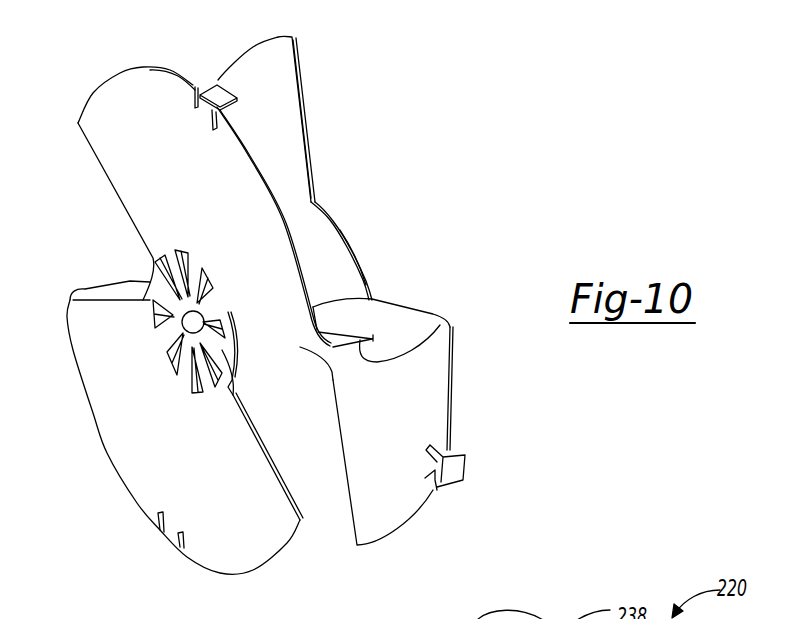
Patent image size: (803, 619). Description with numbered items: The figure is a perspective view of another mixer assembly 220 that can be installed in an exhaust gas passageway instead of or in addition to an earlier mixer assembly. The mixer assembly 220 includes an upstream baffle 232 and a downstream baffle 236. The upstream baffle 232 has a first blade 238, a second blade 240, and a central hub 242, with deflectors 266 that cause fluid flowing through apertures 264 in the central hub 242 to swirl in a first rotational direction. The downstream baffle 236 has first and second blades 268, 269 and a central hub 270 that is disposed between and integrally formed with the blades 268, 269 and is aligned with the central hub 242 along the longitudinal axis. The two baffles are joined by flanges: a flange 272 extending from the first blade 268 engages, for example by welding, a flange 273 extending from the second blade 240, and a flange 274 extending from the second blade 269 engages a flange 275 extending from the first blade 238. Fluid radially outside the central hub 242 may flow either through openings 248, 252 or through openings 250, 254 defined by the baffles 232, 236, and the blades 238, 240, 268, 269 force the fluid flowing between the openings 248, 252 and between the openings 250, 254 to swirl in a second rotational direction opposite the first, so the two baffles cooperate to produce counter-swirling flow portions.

The mixer assembly 220 is at (460, 132).
The upstream baffle 232 is at (166, 410).
The downstream baffle 236 is at (318, 119).
The first blade 238 is at (145, 73).
The second blade 240 is at (232, 568).
The central hub 242 is at (222, 350).
The opening 248 is at (100, 189).
The opening 250 is at (280, 436).
The opening 252 is at (343, 202).
The opening 254 is at (415, 480).
The apertures 264 is at (193, 370).
The deflectors 266 is at (156, 326).
The first blade 268 is at (290, 137).
The second blade 269 is at (427, 405).
The central hub 270 is at (341, 257).
The flange 272 is at (142, 280).
The flange 273 is at (103, 290).
The flange 274 is at (331, 316).
The flange 275 is at (452, 331).